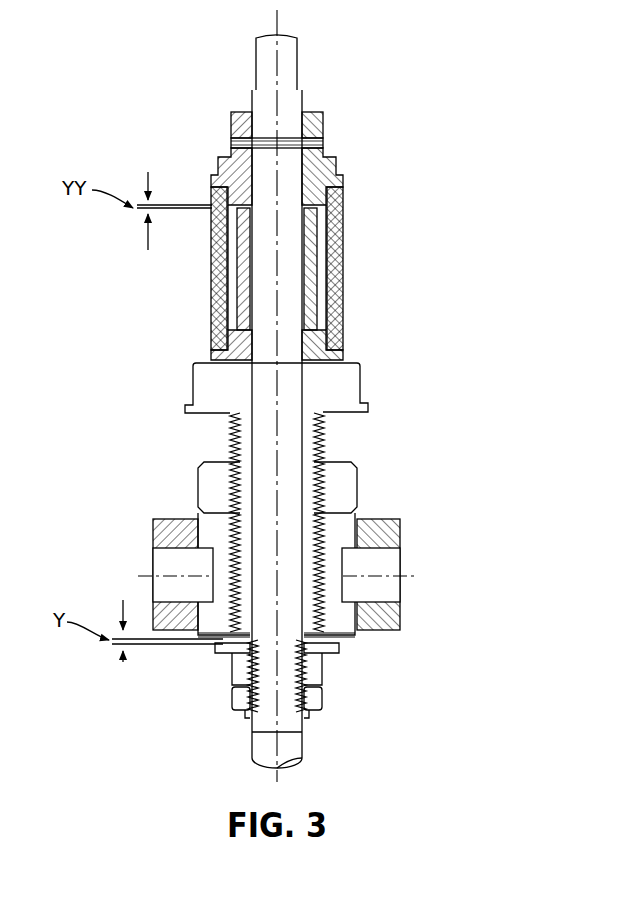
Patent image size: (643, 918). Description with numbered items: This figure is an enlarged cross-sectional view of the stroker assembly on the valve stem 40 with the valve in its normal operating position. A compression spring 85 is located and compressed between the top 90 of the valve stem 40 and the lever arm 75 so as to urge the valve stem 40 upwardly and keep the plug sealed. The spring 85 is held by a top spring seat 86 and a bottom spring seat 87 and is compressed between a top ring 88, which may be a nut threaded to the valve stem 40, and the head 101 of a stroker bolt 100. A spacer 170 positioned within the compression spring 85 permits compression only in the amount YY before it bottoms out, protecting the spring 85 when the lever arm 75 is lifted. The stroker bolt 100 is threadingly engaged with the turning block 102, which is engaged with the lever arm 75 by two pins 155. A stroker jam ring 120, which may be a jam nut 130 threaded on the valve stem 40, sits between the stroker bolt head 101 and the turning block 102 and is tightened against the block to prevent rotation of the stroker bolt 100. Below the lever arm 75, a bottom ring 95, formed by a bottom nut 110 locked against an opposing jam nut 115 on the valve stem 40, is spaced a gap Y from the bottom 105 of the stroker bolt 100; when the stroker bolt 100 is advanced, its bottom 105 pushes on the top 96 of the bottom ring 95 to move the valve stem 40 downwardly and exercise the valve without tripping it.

The valve stem 40 is at (290, 446).
The top of the valve stem 90 is at (287, 64).
The top ring 88 is at (316, 122).
The top spring seat 86 is at (337, 180).
The compression spring 85 is at (355, 234).
The spacer 170 is at (310, 285).
The bottom spring seat 87 is at (340, 357).
The head of the stroker bolt 101 is at (347, 378).
The stroker bolt 100 is at (340, 400).
The jam nut 130 is at (207, 490).
The stroker jam ring 120 is at (335, 488).
The turning block 102 is at (328, 531).
The lever arm 75 is at (158, 535).
The pins 155 is at (162, 565).
The top of the bottom ring 96 is at (223, 636).
The bottom of the stroker bolt 105 is at (330, 647).
The bottom ring 95 is at (318, 678).
The bottom nut 110 is at (313, 668).
The jam nut 115 is at (240, 703).